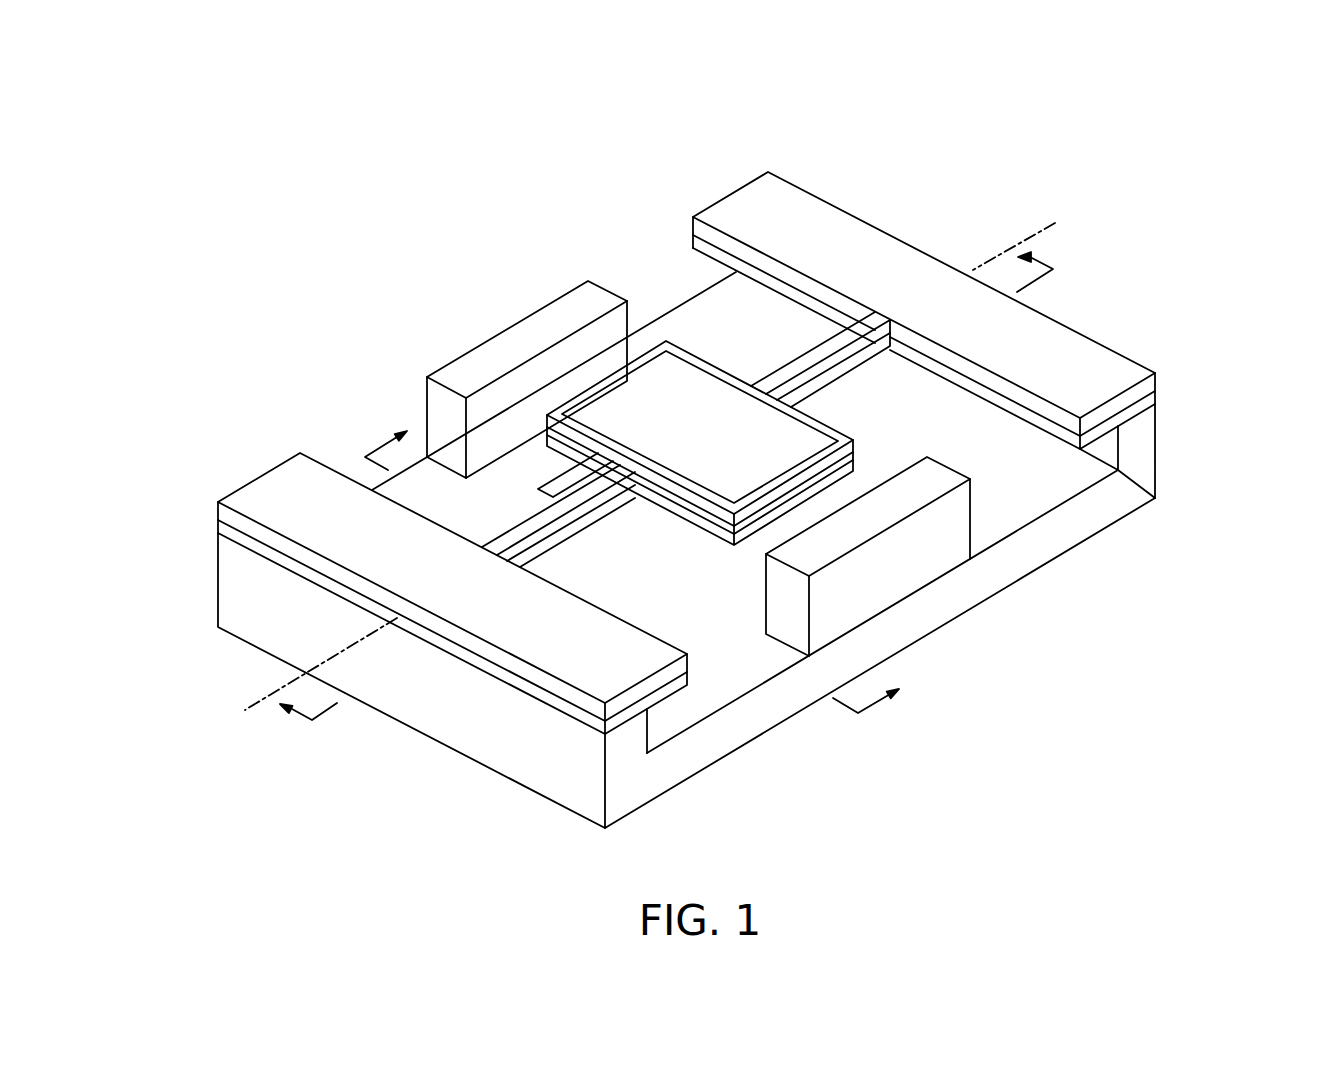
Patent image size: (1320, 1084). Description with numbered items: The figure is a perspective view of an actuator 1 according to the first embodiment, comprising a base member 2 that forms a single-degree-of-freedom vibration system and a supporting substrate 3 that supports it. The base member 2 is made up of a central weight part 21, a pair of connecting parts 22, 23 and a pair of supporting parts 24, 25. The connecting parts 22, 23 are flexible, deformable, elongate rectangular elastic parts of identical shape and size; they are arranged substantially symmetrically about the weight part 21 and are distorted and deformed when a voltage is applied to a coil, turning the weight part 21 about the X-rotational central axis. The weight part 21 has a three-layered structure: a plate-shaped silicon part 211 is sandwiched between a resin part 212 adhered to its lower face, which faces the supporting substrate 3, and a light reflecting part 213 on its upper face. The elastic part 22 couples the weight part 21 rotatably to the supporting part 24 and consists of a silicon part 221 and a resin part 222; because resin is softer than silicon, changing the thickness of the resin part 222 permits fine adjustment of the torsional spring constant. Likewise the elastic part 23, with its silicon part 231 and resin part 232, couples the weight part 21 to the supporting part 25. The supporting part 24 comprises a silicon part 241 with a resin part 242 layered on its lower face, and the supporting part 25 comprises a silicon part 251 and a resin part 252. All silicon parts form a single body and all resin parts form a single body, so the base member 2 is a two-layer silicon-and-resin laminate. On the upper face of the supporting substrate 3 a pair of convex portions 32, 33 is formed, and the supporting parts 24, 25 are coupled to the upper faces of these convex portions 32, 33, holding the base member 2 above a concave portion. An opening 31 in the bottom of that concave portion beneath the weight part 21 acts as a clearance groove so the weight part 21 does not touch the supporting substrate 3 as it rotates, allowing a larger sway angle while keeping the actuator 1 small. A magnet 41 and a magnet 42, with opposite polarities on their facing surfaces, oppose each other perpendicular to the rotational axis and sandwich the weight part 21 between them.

The actuator 1 is at (705, 487).
The base member 2 is at (705, 453).
The supporting substrate 3 is at (718, 565).
The weight part 21 is at (591, 399).
The silicon part 211 is at (545, 418).
The resin part 212 is at (545, 437).
The light reflecting part 213 is at (617, 377).
The connecting part (elastic part) 22 is at (584, 532).
The silicon part 221 is at (553, 500).
The resin part 222 is at (538, 540).
The connecting part (elastic part) 23 is at (863, 383).
The silicon part 231 is at (837, 340).
The resin part 232 is at (827, 373).
The supporting part 24 is at (413, 564).
The silicon part 241 is at (218, 503).
The resin part 242 is at (218, 516).
The supporting part 25 is at (982, 310).
The silicon part 251 is at (1148, 380).
The resin part 252 is at (1222, 298).
The opening 31 is at (727, 563).
The convex portion 32 is at (623, 742).
The convex portion 33 is at (1140, 444).
The magnet 41 is at (927, 560).
The magnet 42 is at (570, 303).